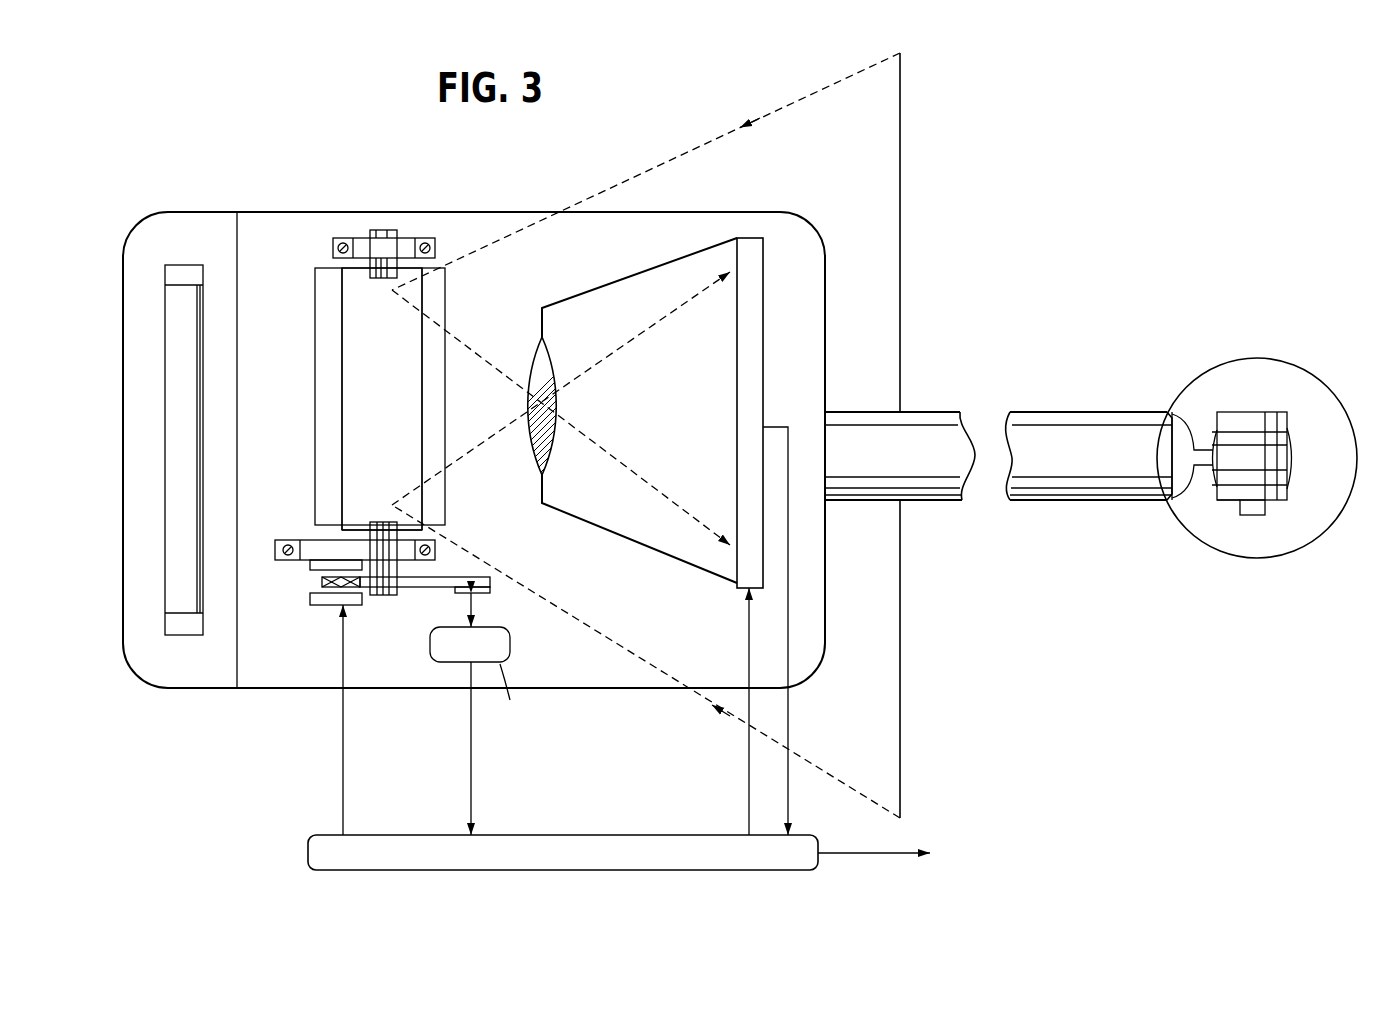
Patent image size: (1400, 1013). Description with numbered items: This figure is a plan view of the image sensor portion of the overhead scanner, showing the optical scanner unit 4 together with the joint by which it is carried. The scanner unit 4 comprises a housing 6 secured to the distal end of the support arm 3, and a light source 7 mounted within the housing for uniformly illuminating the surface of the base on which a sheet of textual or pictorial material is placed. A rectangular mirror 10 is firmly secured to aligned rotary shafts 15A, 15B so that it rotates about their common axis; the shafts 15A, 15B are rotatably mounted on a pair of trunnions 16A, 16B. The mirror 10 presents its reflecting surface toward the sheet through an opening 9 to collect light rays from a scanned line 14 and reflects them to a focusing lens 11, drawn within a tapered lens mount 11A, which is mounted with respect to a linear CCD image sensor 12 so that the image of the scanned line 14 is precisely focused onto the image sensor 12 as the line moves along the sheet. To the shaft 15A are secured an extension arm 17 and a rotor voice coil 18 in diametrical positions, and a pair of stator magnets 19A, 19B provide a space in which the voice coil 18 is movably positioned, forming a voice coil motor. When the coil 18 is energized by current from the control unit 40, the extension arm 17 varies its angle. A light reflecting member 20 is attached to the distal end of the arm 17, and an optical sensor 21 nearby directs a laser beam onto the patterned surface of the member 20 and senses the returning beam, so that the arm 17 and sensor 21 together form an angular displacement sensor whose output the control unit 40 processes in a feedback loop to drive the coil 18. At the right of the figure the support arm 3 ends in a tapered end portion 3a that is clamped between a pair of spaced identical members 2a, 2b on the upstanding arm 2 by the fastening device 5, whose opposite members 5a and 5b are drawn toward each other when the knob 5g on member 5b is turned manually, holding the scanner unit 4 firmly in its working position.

The upstanding arm 2 is at (1293, 470).
The spaced member 2a is at (1270, 438).
The spaced member 2b is at (1272, 480).
The support arm 3 is at (1052, 412).
The tapered end portion 3a is at (1293, 458).
The optical scanner unit 4 is at (450, 170).
The fastening device 5 is at (1322, 418).
The member 5a is at (1250, 418).
The member 5b is at (1228, 497).
The knob 5g is at (1250, 515).
The housing 6 is at (826, 330).
The light source 7 is at (180, 275).
The opening 9 is at (318, 340).
The rectangular mirror 10 is at (366, 405).
The focusing lens 11 is at (553, 360).
The lens housing 11A is at (596, 530).
The linear CCD image sensor 12 is at (752, 238).
The scanned line 14 is at (905, 290).
The rotary shaft 15A is at (392, 593).
The rotary shaft 15B is at (385, 230).
The trunnion 16A is at (305, 540).
The trunnion 16B is at (360, 240).
The extension arm 17 is at (478, 577).
The rotor coil 18 is at (358, 590).
The stator magnet 19A is at (312, 567).
The stator magnet 19B is at (332, 605).
The light reflecting member 20 is at (490, 593).
The optical sensor 21 is at (458, 655).
The control unit 40 is at (618, 835).